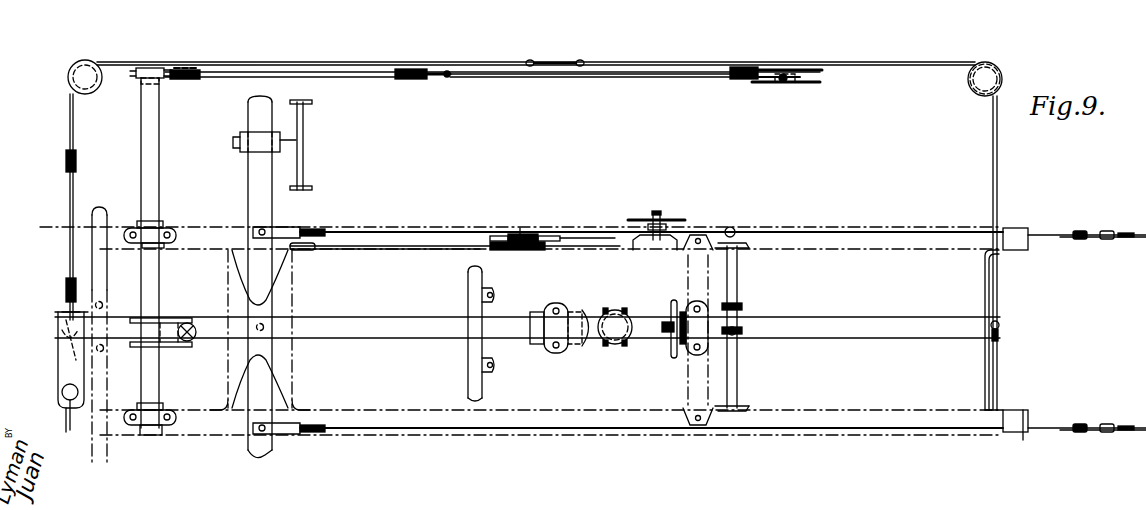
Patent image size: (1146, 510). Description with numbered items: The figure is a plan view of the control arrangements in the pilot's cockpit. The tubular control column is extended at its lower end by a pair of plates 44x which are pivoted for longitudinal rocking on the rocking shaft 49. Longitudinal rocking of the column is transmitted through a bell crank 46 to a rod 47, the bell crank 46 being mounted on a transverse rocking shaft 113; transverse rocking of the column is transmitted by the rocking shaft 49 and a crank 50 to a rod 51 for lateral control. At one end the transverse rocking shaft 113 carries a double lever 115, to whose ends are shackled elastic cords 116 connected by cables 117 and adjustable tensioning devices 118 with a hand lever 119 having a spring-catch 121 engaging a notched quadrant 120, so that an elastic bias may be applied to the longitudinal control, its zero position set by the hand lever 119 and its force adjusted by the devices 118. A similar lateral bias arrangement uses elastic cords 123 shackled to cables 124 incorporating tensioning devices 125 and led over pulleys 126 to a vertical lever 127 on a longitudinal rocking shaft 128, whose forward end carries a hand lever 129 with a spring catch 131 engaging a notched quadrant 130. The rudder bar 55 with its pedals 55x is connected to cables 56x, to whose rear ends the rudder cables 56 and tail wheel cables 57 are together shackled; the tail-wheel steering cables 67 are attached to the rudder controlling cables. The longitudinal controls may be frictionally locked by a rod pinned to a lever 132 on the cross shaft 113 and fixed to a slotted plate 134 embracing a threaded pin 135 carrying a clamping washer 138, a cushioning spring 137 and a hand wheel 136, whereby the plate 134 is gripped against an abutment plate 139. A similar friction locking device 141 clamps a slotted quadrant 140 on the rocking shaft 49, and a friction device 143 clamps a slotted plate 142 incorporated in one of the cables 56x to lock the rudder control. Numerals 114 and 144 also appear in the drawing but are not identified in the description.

The pair of plates 44x is at (612, 345).
The bell crank 46 is at (165, 347).
The rod 47 is at (190, 324).
The rocking shaft 49 is at (340, 325).
The crank 50 is at (72, 362).
The rod 51 is at (80, 392).
The rudder bar 55 is at (262, 185).
The pedals 55x is at (305, 128).
The cables 56 is at (1132, 232).
The cables 56x is at (352, 232).
The tail wheel cables 57 is at (1133, 240).
The cables 67 is at (1133, 426).
The transverse rocking shaft 113 is at (145, 292).
The link 114 is at (166, 230).
The double lever 115 is at (154, 70).
The elastic cords 116 is at (352, 70).
The cables 117 is at (503, 70).
The adjustable tensioning devices 118 is at (742, 68).
The hand lever 119 is at (790, 68).
The notched quadrant 120 is at (808, 84).
The spring-catch 121 is at (783, 84).
The elastic cords 123 is at (76, 300).
The cables 124 is at (228, 70).
The tensioning devices 125 is at (580, 60).
The pulleys 126 is at (88, 74).
The vertical lever 127 is at (1000, 326).
The longitudinal rocking shaft 128 is at (884, 330).
The hand lever 129 is at (742, 345).
The notched quadrant 130 is at (738, 318).
The spring catch 131 is at (742, 333).
The lever 132 is at (138, 250).
The slotted plate 134 is at (478, 246).
The threaded pin 135 is at (520, 234).
The hand wheel 136 is at (500, 236).
The cushioning spring 137 is at (544, 236).
The clamping washer 138 is at (590, 236).
The abutment plate 139 is at (500, 251).
The slotted quadrant 140 is at (695, 300).
The friction locking device 141 is at (668, 345).
The slotted plate 142 is at (655, 216).
The friction device 143 is at (667, 225).
The pipe 144 is at (517, 348).